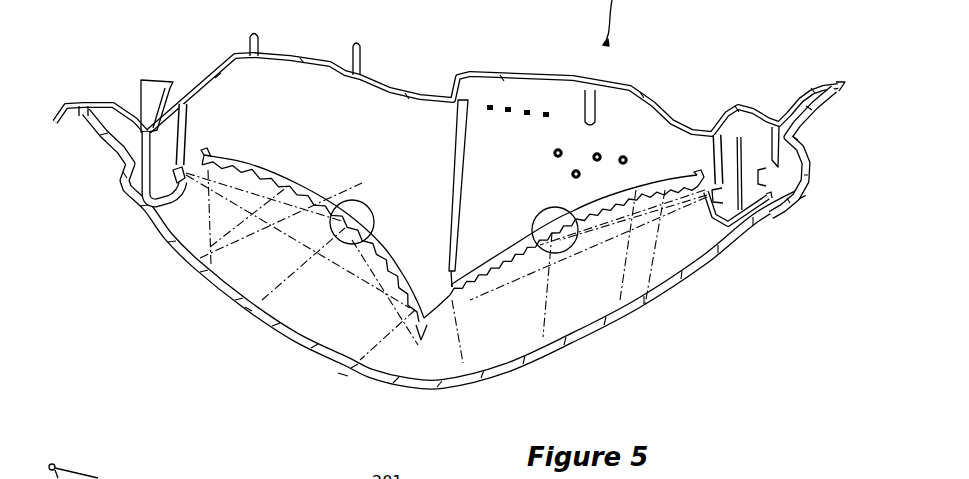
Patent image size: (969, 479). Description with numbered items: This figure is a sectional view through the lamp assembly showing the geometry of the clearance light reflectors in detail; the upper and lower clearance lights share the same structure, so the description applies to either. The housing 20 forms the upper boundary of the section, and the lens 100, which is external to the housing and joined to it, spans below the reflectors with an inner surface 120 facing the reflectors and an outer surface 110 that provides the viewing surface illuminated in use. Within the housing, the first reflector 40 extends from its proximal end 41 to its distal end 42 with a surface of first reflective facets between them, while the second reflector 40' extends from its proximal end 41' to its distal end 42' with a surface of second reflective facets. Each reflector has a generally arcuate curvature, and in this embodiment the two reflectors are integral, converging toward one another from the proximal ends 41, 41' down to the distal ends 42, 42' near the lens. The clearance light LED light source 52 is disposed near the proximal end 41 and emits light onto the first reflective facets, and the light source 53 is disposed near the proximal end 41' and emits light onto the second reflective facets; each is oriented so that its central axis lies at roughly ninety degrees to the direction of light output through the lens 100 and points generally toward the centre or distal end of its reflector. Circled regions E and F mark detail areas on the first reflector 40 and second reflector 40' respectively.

The housing 20 is at (405, 92).
The first reflector 40 is at (312, 168).
The second reflector 40' is at (564, 182).
The proximal end 41 is at (179, 110).
The proximal end 41' is at (762, 131).
The distal end 42 is at (394, 374).
The distal end 42' is at (453, 374).
The LED light source 52 is at (140, 205).
The LED light source 53 is at (733, 202).
The lens 100 is at (619, 324).
The outer surface 110 is at (340, 373).
The inner surface 120 is at (247, 310).
The detail region E is at (364, 208).
The detail region F is at (537, 210).